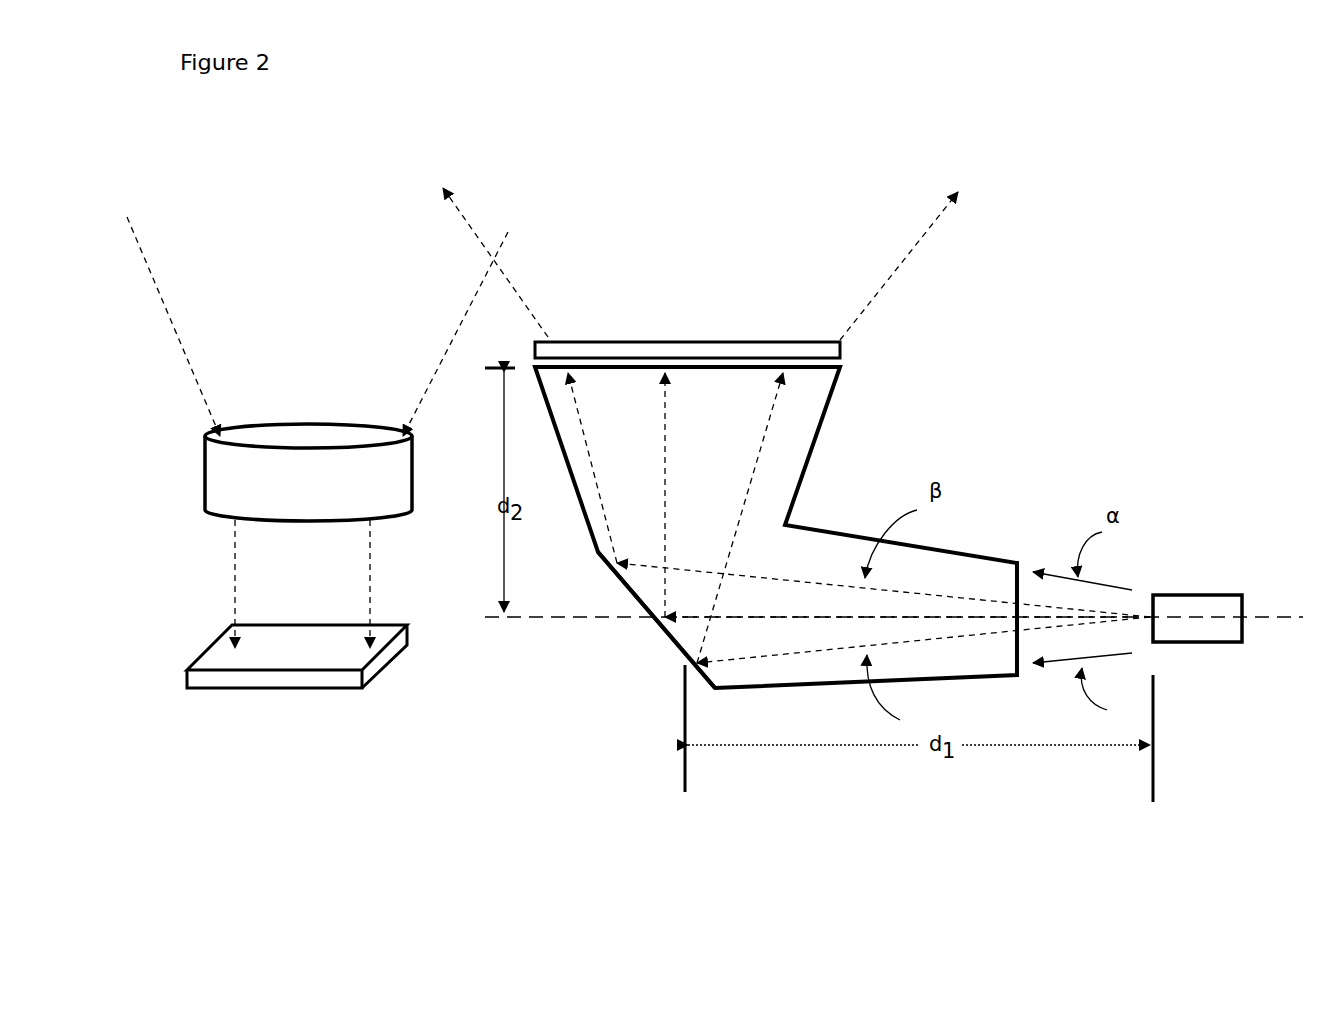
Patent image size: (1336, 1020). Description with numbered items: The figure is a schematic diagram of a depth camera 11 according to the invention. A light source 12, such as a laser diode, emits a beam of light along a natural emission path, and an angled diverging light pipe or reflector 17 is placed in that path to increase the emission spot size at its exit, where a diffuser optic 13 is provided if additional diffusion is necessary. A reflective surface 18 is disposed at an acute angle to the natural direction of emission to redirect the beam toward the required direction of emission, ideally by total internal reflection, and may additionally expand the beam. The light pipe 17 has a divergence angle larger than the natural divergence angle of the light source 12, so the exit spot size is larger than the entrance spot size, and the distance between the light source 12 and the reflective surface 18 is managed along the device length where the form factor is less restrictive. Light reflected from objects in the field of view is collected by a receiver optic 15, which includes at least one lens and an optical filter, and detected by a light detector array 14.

The depth camera 11 is at (330, 278).
The light source 12 is at (1215, 597).
The diffuser optic 13 is at (760, 342).
The light detector array 14 is at (300, 680).
The receiver optic 15 is at (220, 492).
The angled diverging light pipe 17 is at (810, 455).
The reflective surface 18 is at (673, 645).